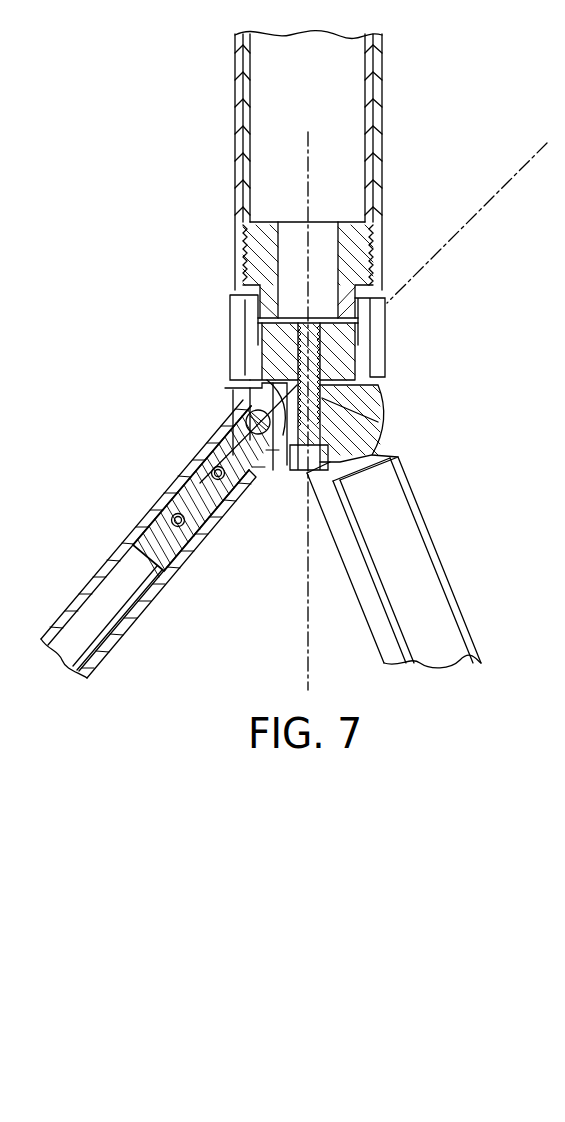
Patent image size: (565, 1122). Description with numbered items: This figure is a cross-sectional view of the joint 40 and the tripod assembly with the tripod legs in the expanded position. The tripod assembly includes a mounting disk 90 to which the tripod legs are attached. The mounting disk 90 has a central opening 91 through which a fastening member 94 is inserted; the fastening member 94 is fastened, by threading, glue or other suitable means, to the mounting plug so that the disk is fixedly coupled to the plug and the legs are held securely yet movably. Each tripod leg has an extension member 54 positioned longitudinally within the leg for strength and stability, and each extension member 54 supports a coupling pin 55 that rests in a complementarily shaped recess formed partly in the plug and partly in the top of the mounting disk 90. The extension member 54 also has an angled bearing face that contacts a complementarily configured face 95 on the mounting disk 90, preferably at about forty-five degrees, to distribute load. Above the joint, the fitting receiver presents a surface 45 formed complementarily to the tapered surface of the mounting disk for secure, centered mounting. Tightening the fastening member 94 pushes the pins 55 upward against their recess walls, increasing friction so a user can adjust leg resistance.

The surface 45 is at (318, 150).
The joint 40 is at (302, 635).
The extension member 54 is at (228, 453).
The coupling pin 55 is at (245, 418).
The face 95 is at (248, 394).
The central opening 91 is at (373, 407).
The mounting disk 90 is at (350, 423).
The fastening member 94 is at (290, 462).